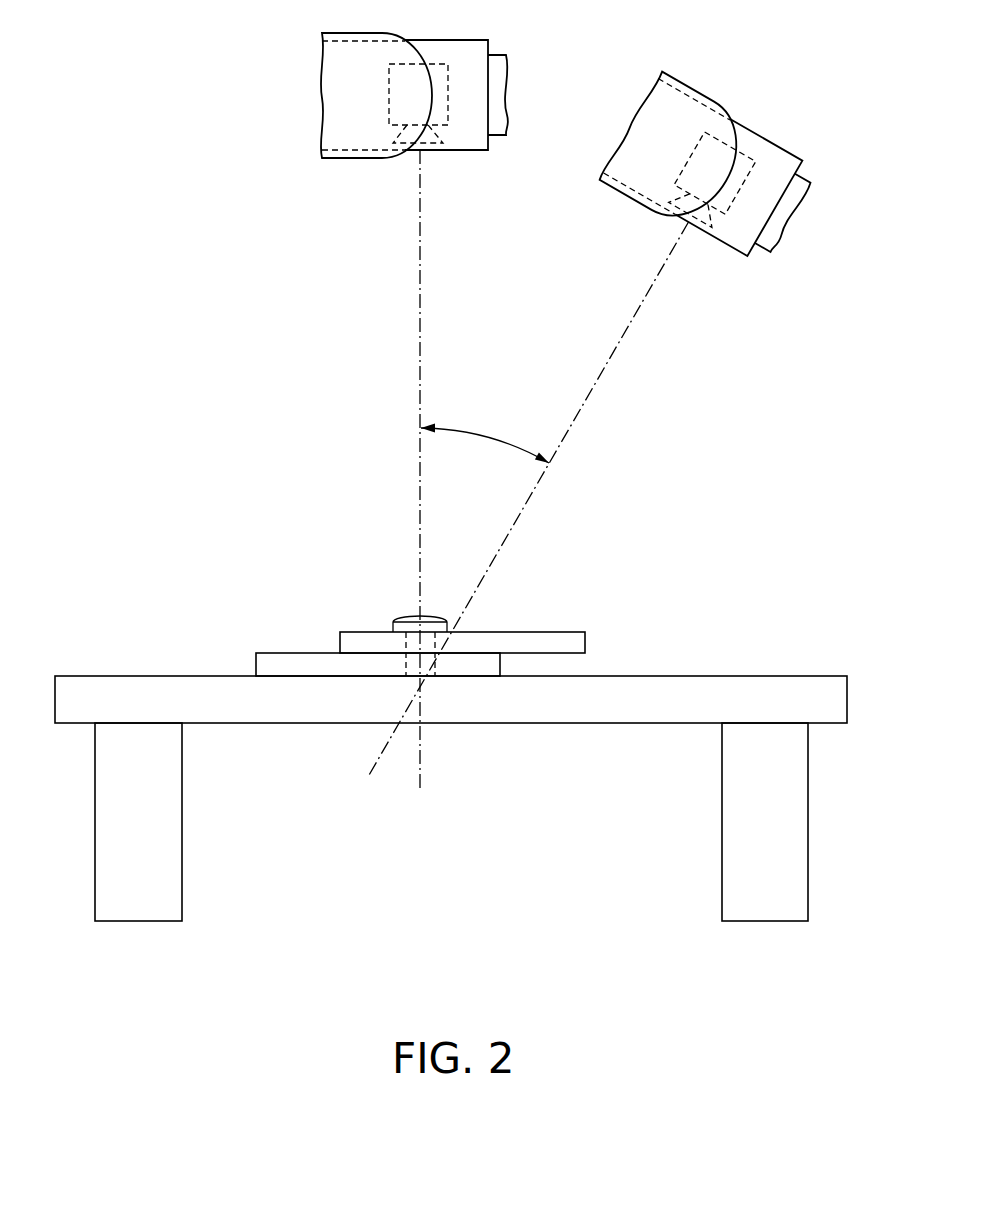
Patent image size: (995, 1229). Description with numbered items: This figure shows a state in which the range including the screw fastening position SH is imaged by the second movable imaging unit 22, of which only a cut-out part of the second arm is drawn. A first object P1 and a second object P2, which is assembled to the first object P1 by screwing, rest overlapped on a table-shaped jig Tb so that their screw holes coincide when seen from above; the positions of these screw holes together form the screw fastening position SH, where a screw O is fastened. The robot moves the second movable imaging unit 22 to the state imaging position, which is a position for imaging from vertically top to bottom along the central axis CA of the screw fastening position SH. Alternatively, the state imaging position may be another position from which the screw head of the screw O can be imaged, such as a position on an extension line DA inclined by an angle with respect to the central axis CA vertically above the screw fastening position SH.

The second movable imaging unit 22 is at (428, 152).
The central axis CA is at (420, 337).
The extension line DA is at (616, 348).
The screw O is at (403, 615).
The screw fastening position SH is at (432, 613).
The first object P1 is at (288, 653).
The second object P2 is at (563, 632).
The jig Tb is at (748, 676).